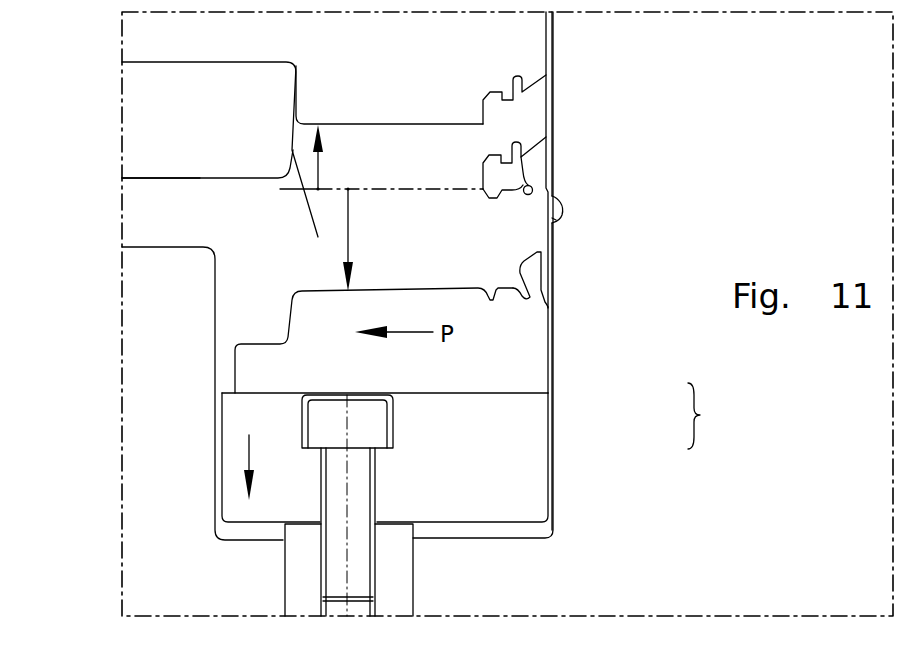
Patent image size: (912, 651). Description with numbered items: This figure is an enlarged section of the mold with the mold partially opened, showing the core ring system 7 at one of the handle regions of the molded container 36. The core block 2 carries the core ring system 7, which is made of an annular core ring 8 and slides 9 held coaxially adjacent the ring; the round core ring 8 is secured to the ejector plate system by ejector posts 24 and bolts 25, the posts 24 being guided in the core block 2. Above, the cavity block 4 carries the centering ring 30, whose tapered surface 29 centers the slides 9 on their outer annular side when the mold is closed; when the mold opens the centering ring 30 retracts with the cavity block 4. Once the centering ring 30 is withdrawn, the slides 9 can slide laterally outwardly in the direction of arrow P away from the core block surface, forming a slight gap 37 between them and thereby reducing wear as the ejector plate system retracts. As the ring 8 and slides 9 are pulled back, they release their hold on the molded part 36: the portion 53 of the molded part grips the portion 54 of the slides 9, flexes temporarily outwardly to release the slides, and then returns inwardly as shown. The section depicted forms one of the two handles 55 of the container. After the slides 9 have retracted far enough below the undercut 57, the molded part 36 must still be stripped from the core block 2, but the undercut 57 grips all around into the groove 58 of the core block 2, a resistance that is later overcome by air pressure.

The core block 2 is at (175, 339).
The cavity block 4 is at (338, 54).
The core ring system 7 is at (702, 416).
The core ring 8 is at (503, 427).
The slides 9 is at (503, 369).
The ejector posts 24 is at (394, 585).
The bolts 25 is at (371, 428).
The tapered surface 29 is at (318, 238).
The centering ring 30 is at (260, 139).
The molded container 36 is at (548, 95).
The gap 37 is at (550, 341).
The portion of molded part 53 is at (531, 188).
The portion of slides 54 is at (528, 277).
The handles 55 is at (507, 177).
The undercut 57 is at (556, 203).
The groove 58 is at (561, 217).